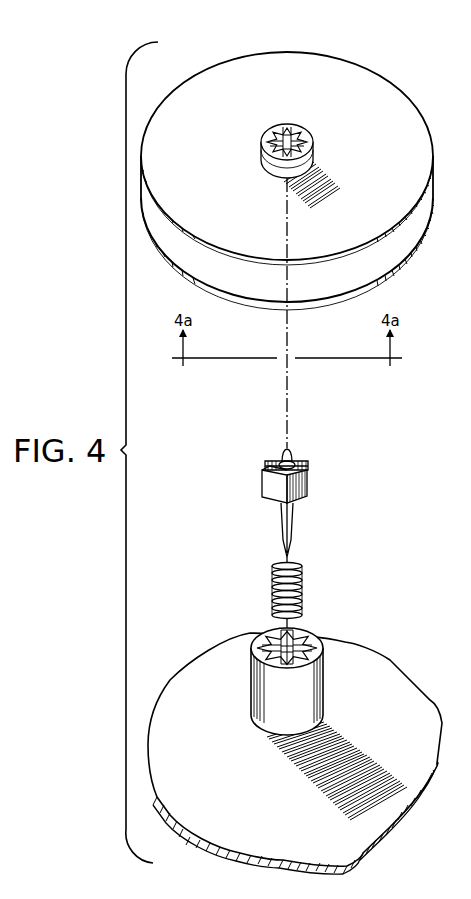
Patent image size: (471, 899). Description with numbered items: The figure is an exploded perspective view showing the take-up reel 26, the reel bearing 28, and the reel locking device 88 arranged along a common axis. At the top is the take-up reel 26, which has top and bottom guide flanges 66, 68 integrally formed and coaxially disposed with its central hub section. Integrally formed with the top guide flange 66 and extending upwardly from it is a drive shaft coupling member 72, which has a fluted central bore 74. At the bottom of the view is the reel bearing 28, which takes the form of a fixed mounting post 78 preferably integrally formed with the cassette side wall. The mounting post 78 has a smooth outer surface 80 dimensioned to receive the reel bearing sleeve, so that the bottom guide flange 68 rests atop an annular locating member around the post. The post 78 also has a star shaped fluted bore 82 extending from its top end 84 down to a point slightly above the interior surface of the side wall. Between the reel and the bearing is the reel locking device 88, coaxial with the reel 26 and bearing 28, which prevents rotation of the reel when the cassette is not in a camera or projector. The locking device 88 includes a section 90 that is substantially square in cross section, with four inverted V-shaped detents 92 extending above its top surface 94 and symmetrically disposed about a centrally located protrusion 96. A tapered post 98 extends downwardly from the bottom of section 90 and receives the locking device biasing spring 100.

The take-up reel 26 is at (313, 50).
The top guide flange 66 is at (432, 127).
The bottom guide flange 68 is at (432, 193).
The drive shaft coupling member 72 is at (272, 130).
The fluted central bore 74 is at (302, 130).
The reel locking device 88 is at (316, 459).
The section 90 is at (275, 491).
The inverted V-shaped detents 92 is at (274, 461).
The top surface 94 is at (309, 478).
The centrally located protrusion 96 is at (288, 457).
The tapered post 98 is at (296, 527).
The locking device biasing spring 100 is at (303, 569).
The reel bearing 28 is at (261, 616).
The smooth outer surface 80 is at (290, 686).
The mounting post 78 is at (316, 640).
The star shaped fluted bore 82 is at (300, 634).
The top end 84 is at (320, 641).